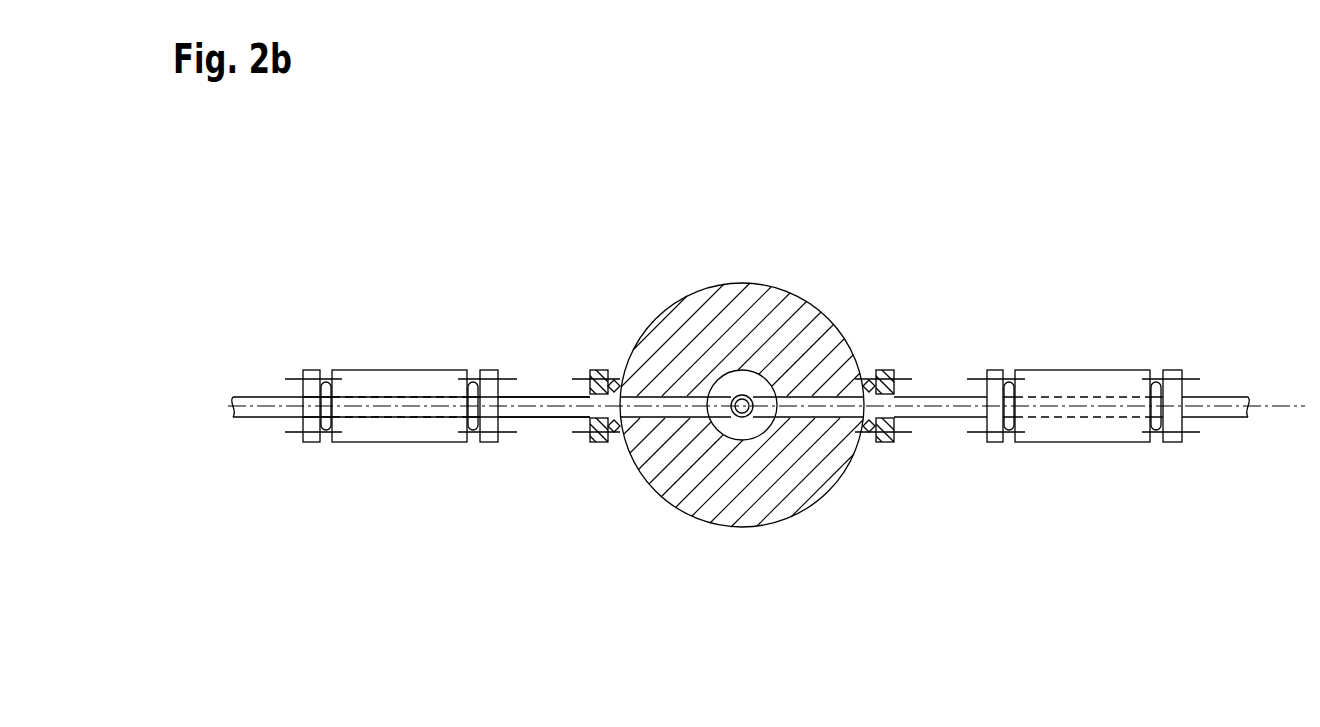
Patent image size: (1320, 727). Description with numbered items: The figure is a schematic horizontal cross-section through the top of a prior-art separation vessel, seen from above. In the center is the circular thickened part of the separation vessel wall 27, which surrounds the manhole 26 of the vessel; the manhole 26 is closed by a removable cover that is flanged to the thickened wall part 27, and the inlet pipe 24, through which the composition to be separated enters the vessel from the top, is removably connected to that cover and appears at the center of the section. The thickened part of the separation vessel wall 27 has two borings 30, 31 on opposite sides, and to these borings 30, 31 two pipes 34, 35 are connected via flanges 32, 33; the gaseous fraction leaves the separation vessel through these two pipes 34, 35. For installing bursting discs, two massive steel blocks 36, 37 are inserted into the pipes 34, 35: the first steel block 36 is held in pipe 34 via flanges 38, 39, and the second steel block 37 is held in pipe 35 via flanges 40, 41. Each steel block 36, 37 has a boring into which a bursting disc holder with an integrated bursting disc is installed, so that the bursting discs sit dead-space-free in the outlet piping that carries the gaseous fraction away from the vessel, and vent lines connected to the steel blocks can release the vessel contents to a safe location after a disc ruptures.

The inlet pipe 24 is at (750, 414).
The manhole 26 is at (727, 425).
The thickened part of the separation vessel wall 27 is at (802, 424).
The boring 30 is at (645, 400).
The boring 31 is at (832, 400).
The flange 32 is at (599, 370).
The flange 33 is at (885, 370).
The pipe 34 is at (255, 396).
The pipe 35 is at (937, 396).
The massive steel block 36 is at (389, 382).
The massive steel block 37 is at (1088, 382).
The flange 38 is at (312, 380).
The flange 39 is at (491, 380).
The flange 40 is at (995, 380).
The flange 41 is at (1170, 380).